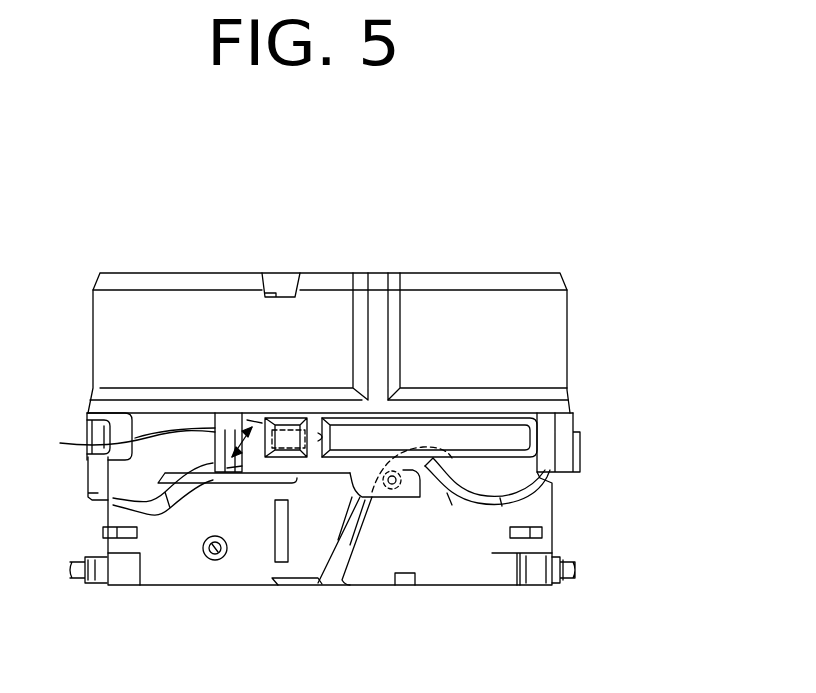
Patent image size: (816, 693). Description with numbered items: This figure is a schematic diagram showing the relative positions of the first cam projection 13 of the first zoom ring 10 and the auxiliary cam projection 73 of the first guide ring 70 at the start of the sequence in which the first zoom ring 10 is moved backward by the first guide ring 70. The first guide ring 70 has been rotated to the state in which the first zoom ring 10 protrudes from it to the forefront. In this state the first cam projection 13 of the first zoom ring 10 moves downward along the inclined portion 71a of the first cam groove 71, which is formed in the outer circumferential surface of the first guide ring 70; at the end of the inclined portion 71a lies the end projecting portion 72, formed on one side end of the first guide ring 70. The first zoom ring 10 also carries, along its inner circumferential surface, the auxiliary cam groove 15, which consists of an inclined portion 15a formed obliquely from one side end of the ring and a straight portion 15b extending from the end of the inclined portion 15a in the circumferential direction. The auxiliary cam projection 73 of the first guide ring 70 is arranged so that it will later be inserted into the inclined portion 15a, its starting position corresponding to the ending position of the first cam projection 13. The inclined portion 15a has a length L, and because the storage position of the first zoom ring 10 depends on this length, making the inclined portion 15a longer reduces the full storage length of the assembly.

The first zoom ring 10 is at (572, 332).
The first guide ring 70 is at (562, 518).
The first cam groove 71 is at (484, 504).
The inclined portion 71a is at (352, 545).
The end projecting portion 72 is at (292, 585).
The auxiliary cam projection 73 is at (203, 548).
The first cam projection 13 is at (393, 492).
The auxiliary cam groove 15 is at (353, 548).
The inclined portion 15a is at (262, 428).
The straight portion 15b is at (295, 448).
The length of the inclined portion L is at (129, 442).